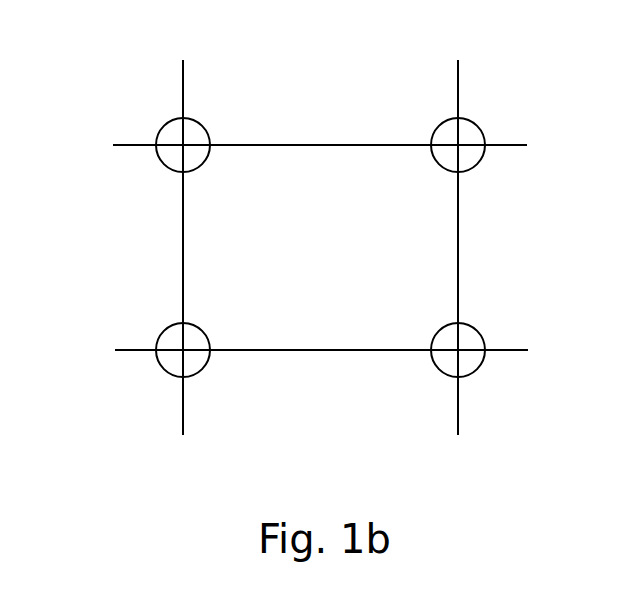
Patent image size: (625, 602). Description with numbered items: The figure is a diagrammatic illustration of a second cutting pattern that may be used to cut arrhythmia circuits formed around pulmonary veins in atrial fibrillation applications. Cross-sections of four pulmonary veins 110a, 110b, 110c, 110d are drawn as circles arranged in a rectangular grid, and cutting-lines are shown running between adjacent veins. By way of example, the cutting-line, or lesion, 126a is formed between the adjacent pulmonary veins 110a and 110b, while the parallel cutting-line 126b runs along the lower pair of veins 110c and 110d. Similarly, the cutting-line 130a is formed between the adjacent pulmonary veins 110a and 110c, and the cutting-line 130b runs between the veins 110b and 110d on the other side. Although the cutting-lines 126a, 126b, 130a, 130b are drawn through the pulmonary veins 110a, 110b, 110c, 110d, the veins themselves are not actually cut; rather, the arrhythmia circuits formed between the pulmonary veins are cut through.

The pulmonary vein 110a is at (197, 121).
The pulmonary vein 110b is at (469, 118).
The pulmonary vein 110c is at (208, 333).
The pulmonary vein 110d is at (470, 322).
The cutting-line 126a is at (340, 145).
The cutting-line 126b is at (133, 350).
The cutting-line 130a is at (183, 74).
The cutting-line 130b is at (458, 237).